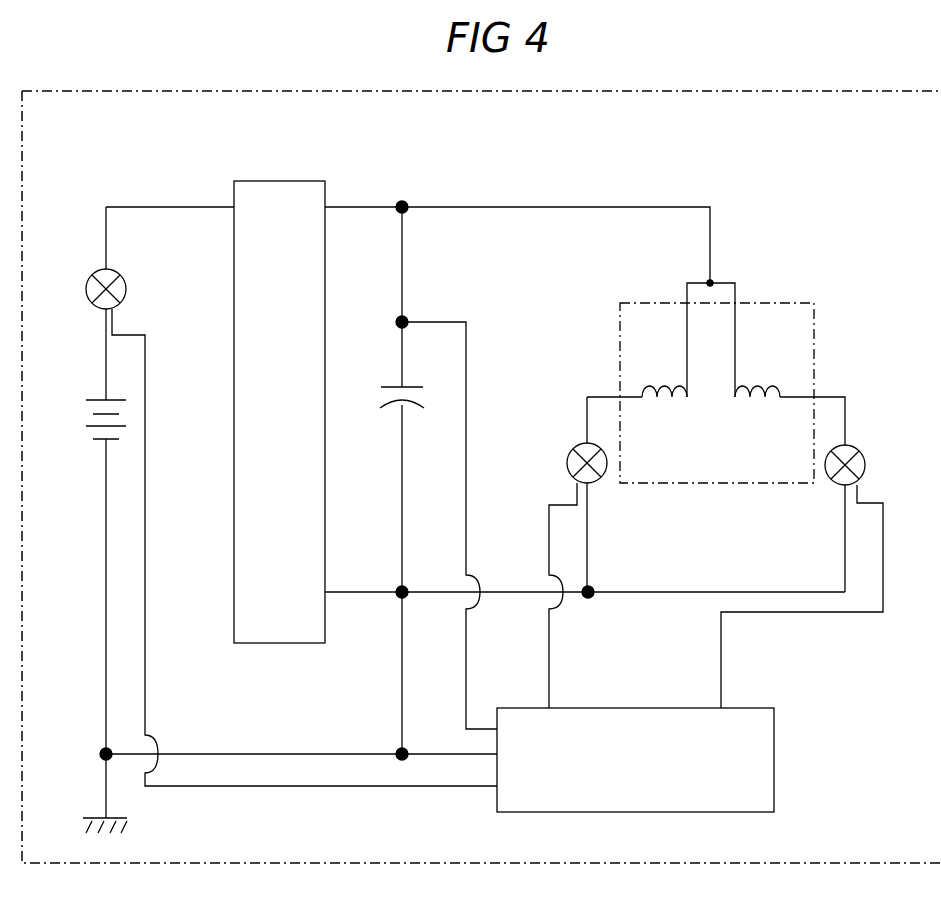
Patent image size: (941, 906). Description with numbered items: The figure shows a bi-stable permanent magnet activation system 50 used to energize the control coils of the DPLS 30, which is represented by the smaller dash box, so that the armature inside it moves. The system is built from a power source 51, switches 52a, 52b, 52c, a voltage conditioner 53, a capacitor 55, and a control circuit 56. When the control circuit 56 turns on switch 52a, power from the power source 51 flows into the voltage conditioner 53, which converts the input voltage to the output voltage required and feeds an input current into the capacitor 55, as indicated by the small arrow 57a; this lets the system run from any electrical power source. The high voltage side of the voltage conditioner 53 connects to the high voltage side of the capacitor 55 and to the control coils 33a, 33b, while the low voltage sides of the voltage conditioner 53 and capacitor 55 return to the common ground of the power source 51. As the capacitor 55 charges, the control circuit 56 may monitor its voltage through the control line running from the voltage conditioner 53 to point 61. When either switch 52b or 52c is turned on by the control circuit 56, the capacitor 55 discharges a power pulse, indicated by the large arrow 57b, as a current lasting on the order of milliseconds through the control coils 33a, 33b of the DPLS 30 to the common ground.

The bi-stable permanent magnet activation system 50 is at (115, 90).
The voltage conditioner 53 is at (290, 180).
The switch 52a is at (93, 276).
The power source 51 is at (90, 400).
The small arrow 57a is at (370, 209).
The large arrow 57b is at (557, 207).
The point 61 is at (406, 316).
The capacitor 55 is at (398, 385).
The DPLS 30 is at (730, 364).
The control coil 33a is at (660, 398).
The control coil 33b is at (760, 398).
The switch 52b is at (575, 452).
The switch 52c is at (857, 452).
The control circuit 56 is at (775, 762).